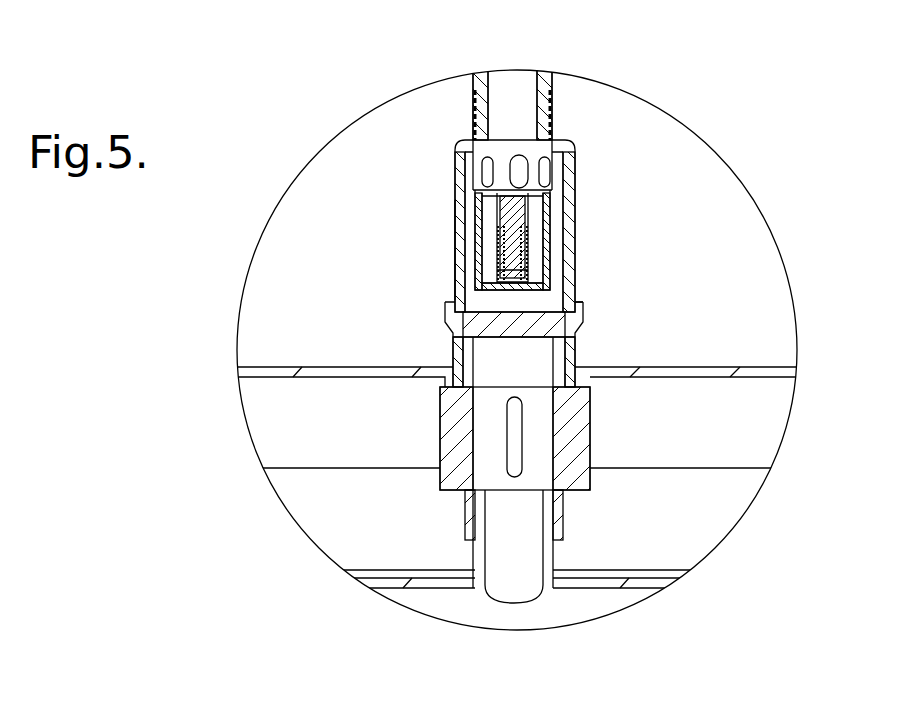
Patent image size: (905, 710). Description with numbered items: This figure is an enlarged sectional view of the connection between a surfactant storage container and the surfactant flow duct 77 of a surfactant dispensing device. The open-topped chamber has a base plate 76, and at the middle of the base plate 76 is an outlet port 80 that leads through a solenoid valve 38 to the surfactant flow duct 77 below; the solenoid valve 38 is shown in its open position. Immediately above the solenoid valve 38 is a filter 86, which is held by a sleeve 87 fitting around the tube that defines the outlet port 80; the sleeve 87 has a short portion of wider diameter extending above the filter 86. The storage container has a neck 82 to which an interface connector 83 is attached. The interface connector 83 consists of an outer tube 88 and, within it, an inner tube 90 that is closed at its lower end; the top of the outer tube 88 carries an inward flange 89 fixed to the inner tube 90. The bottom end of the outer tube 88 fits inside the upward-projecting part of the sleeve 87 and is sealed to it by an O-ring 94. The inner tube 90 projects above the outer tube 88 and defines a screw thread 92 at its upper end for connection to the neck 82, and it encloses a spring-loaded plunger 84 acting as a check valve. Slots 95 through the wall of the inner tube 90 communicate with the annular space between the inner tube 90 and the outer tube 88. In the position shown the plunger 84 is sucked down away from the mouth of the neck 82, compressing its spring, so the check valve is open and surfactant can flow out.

The solenoid valve 38 is at (520, 440).
The base plate 76 is at (705, 373).
The surfactant flow duct 77 is at (577, 605).
The outlet port 80 is at (540, 355).
The neck 82 is at (545, 82).
The interface connector 83 is at (576, 245).
The spring-loaded plunger 84 is at (527, 203).
The filter 86 is at (475, 328).
The sleeve 87 is at (458, 360).
The outer tube 88 is at (460, 262).
The inward flange 89 is at (563, 150).
The inner tube 90 is at (475, 212).
The screw thread 92 is at (473, 118).
The O-ring 94 is at (569, 308).
The slots 95 is at (519, 168).